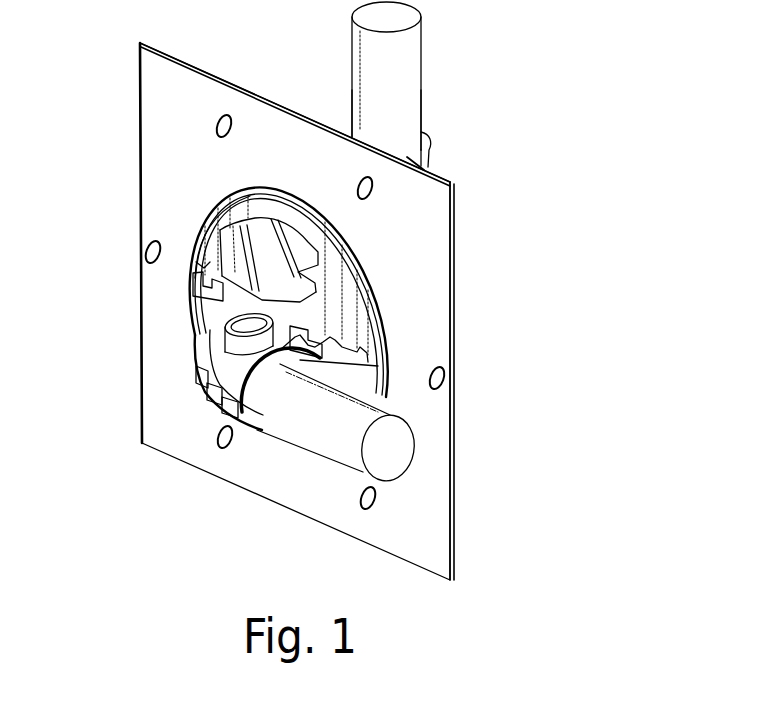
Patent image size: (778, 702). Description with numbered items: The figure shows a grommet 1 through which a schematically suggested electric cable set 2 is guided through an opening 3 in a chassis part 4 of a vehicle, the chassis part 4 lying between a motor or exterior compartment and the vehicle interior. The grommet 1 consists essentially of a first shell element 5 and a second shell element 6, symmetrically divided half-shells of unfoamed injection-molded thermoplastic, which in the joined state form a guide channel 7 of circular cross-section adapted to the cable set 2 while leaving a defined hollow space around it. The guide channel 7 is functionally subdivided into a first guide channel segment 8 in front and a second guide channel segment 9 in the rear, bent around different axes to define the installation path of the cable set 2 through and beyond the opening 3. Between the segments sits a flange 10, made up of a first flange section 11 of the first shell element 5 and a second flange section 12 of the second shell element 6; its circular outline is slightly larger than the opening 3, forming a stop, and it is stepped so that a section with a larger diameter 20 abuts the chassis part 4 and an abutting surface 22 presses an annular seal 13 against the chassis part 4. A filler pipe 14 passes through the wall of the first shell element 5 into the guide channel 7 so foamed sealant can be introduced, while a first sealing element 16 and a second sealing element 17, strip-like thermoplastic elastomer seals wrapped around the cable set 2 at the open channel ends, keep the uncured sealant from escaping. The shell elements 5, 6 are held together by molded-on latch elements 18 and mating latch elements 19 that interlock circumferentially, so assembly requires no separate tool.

The grommet 1 is at (345, 267).
The electric cable set 2 is at (352, 55).
The opening 3 is at (421, 292).
The chassis part 4 is at (162, 92).
The first shell element 5 is at (189, 199).
The second shell element 6 is at (208, 326).
The guide channel 7 is at (377, 330).
The first guide channel segment 8 is at (203, 420).
The second guide channel segment 9 is at (448, 161).
The flange 10 is at (398, 372).
The first flange section 11 is at (224, 203).
The second flange section 12 is at (205, 310).
The annular seal 13 is at (421, 292).
The filler pipe 14 is at (215, 338).
The first sealing element 16 is at (258, 432).
The second sealing element 17 is at (411, 110).
The latch elements 18 is at (202, 274).
The mating latch elements 19 is at (197, 264).
The section with a larger diameter 20 is at (421, 292).
The abutting surface 22 is at (380, 288).